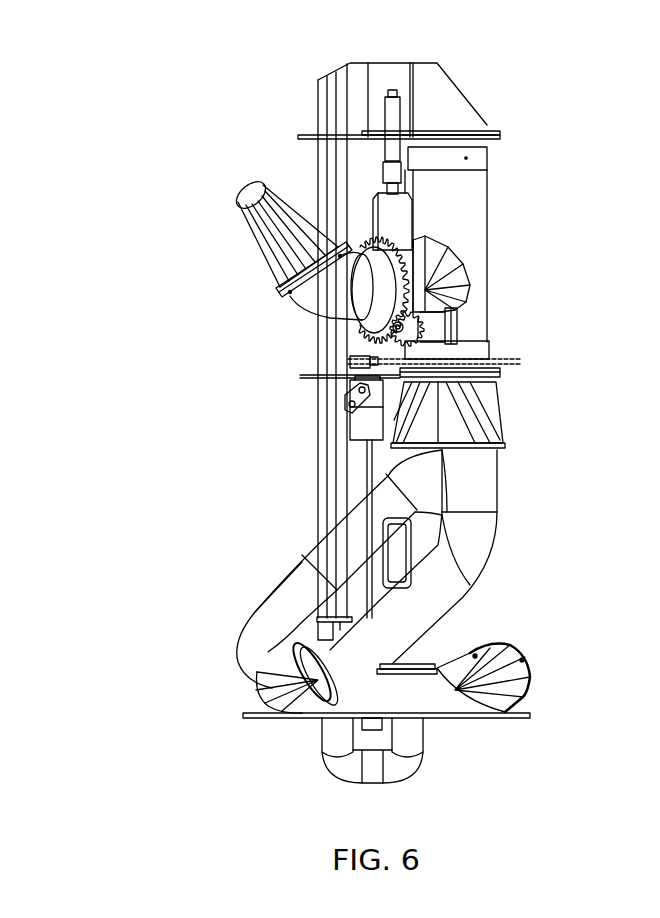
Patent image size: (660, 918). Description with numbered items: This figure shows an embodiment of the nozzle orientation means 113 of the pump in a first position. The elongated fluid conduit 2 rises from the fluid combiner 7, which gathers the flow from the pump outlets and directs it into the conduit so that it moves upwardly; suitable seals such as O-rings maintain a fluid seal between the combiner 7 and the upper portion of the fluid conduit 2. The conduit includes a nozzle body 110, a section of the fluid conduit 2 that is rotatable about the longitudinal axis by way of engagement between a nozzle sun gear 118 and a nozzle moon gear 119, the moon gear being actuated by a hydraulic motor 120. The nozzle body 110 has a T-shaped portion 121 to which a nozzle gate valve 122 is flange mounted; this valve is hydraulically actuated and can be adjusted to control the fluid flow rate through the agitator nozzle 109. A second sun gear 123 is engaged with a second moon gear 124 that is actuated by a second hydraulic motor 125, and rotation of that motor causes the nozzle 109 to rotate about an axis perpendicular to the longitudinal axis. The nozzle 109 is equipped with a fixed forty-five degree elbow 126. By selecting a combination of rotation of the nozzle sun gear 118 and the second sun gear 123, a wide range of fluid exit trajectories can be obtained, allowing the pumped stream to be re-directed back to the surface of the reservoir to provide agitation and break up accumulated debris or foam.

The elongated fluid conduit 2 is at (448, 88).
The nozzle orientation means 113 is at (158, 119).
The nozzle body 110 is at (478, 229).
The second sun gear 123 is at (400, 236).
The agitator nozzle 109 is at (243, 220).
The fixed 45° elbow 126 is at (283, 292).
The T-shaped portion 121 is at (430, 295).
The nozzle gate valve 122 is at (447, 252).
The second moon gear 124 is at (440, 322).
The second hydraulic motor 125 is at (420, 330).
The nozzle sun gear 118 is at (500, 362).
The nozzle moon gear 119 is at (350, 358).
The hydraulic motor 120 is at (362, 427).
The fluid combiner 7 is at (492, 410).